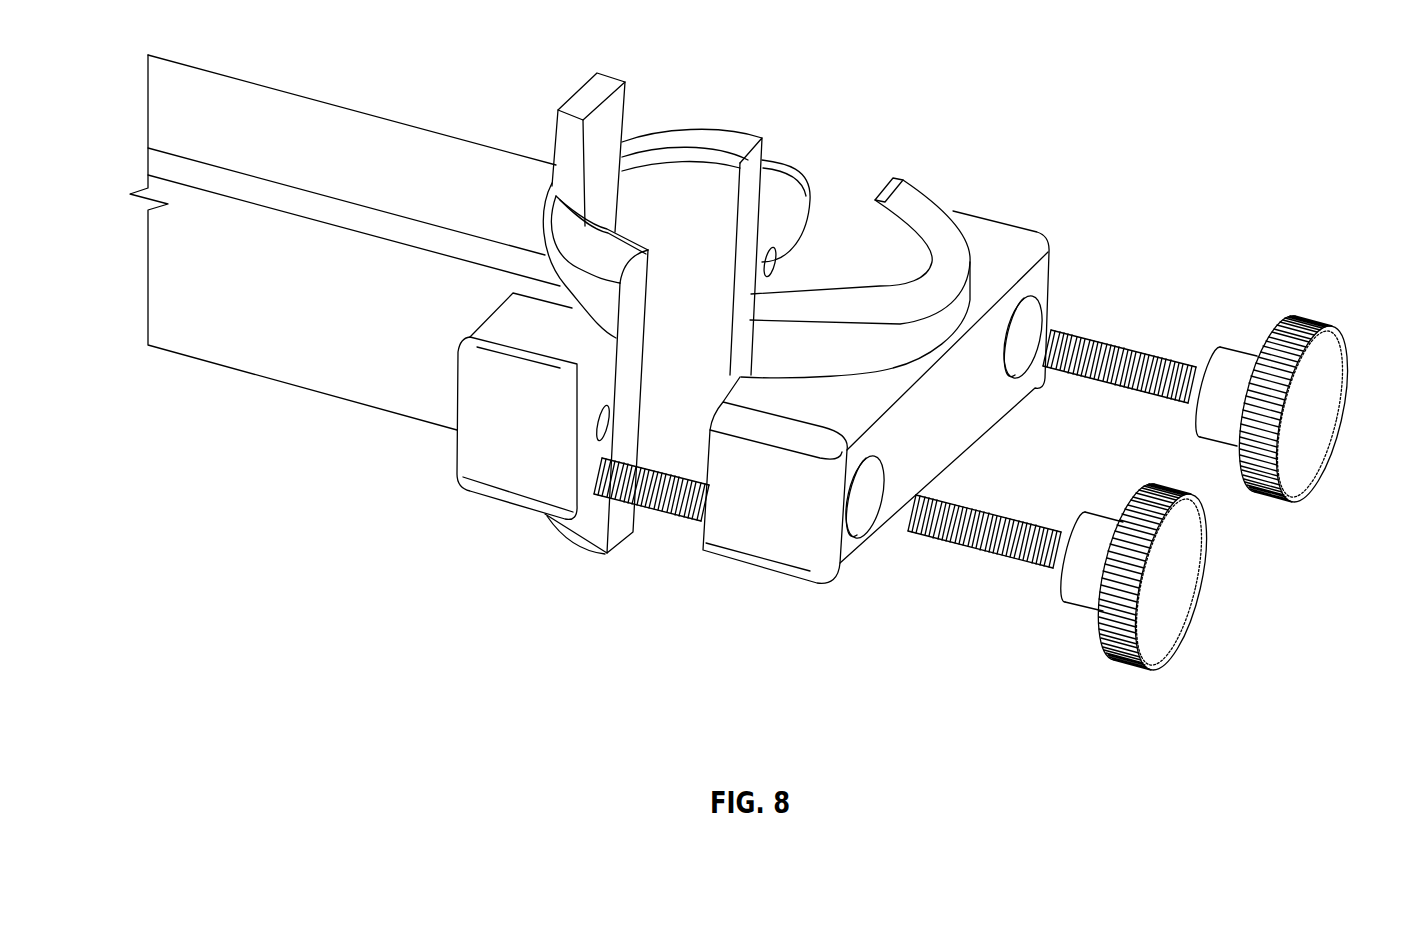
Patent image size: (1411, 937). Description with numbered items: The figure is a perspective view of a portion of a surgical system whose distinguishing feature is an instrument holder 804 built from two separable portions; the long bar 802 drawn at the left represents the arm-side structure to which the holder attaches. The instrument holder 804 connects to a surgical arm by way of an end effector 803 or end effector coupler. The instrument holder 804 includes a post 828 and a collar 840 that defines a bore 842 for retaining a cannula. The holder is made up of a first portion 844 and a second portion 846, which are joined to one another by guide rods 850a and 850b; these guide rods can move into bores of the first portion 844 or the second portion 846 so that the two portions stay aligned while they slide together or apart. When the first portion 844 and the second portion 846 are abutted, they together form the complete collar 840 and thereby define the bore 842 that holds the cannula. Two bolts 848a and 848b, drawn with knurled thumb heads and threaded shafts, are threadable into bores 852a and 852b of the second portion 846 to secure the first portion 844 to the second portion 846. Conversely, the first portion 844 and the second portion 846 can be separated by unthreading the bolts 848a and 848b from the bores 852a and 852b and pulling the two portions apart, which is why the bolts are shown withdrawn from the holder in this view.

The bar 802 is at (345, 250).
The end effector 803 is at (287, 347).
The instrument holder 804 is at (738, 108).
The post 828 is at (592, 92).
The collar 840 is at (772, 228).
The bore 842 is at (888, 187).
The first portion 844 is at (491, 518).
The second portion 846 is at (818, 406).
The bolt 848a is at (1178, 603).
The bolt 848b is at (1313, 413).
The guide rod 850a is at (672, 517).
The guide rod 850b is at (823, 297).
The bore 852a is at (853, 507).
The bore 852b is at (1023, 331).